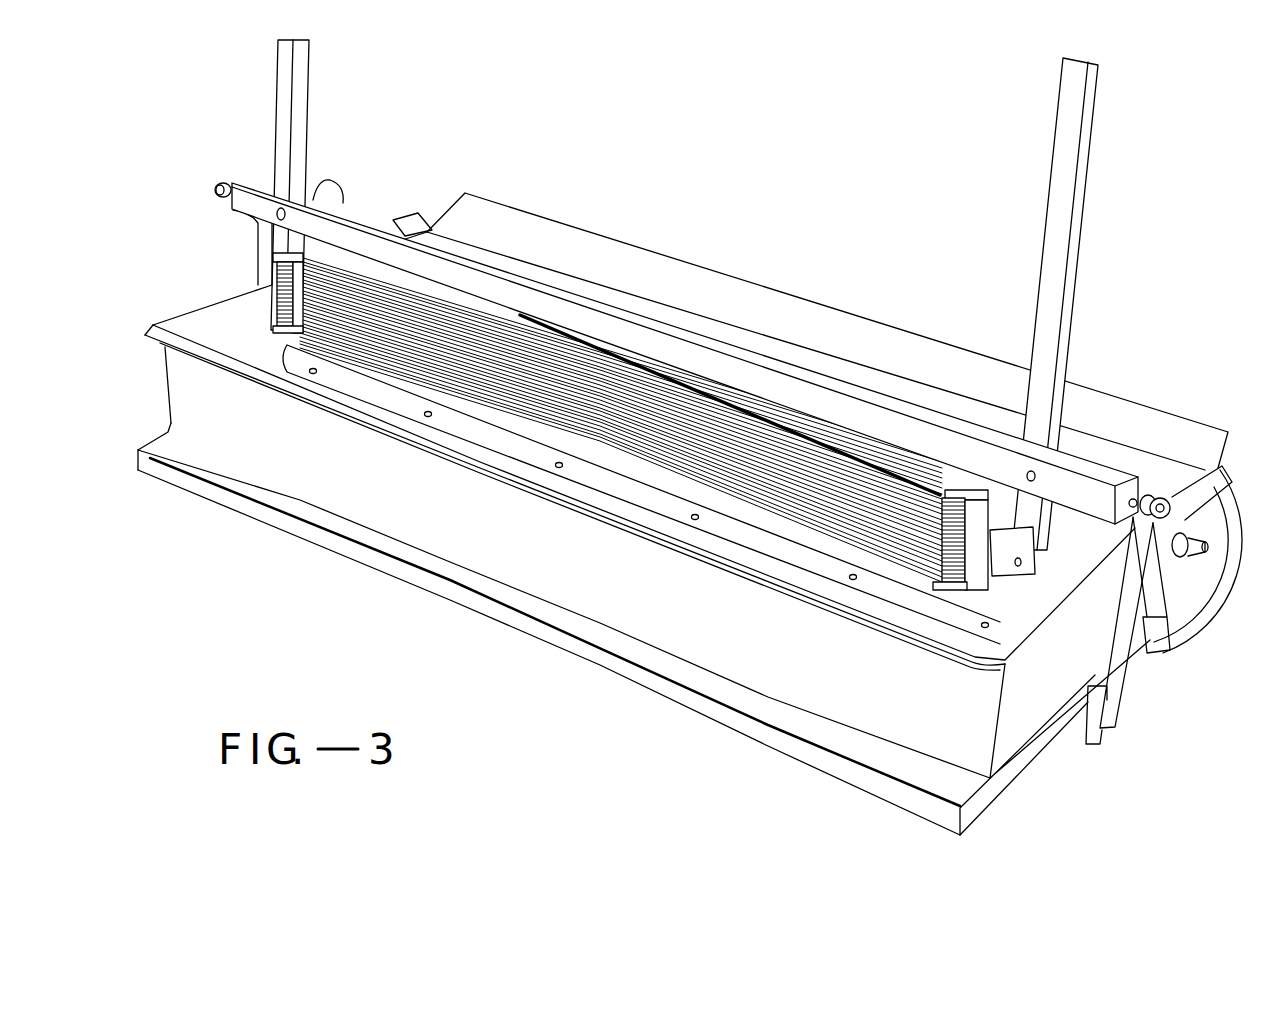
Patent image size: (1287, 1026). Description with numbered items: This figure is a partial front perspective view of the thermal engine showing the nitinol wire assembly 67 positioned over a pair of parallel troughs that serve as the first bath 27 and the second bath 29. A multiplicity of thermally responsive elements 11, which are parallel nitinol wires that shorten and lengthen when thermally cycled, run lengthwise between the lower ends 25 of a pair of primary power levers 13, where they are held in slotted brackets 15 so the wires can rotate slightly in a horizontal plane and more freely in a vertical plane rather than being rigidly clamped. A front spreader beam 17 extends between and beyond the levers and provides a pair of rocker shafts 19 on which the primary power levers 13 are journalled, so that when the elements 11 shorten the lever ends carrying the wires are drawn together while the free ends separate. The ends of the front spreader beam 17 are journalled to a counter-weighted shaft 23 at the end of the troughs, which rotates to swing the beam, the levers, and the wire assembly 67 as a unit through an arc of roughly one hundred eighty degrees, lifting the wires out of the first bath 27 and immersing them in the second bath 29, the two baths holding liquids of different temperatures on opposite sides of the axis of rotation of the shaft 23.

The thermally responsive elements 11 is at (597, 440).
The primary power levers 13 is at (350, 149).
The brackets 15 is at (282, 303).
The front spreader beam 17 is at (718, 343).
The rocker shafts 19 is at (279, 208).
The counter-weighted shaft 23 is at (1174, 605).
The lower ends of the primary levers 25 is at (1037, 542).
The first bath 27 is at (250, 345).
The second bath 29 is at (1182, 486).
The wire assembly 67 is at (645, 425).